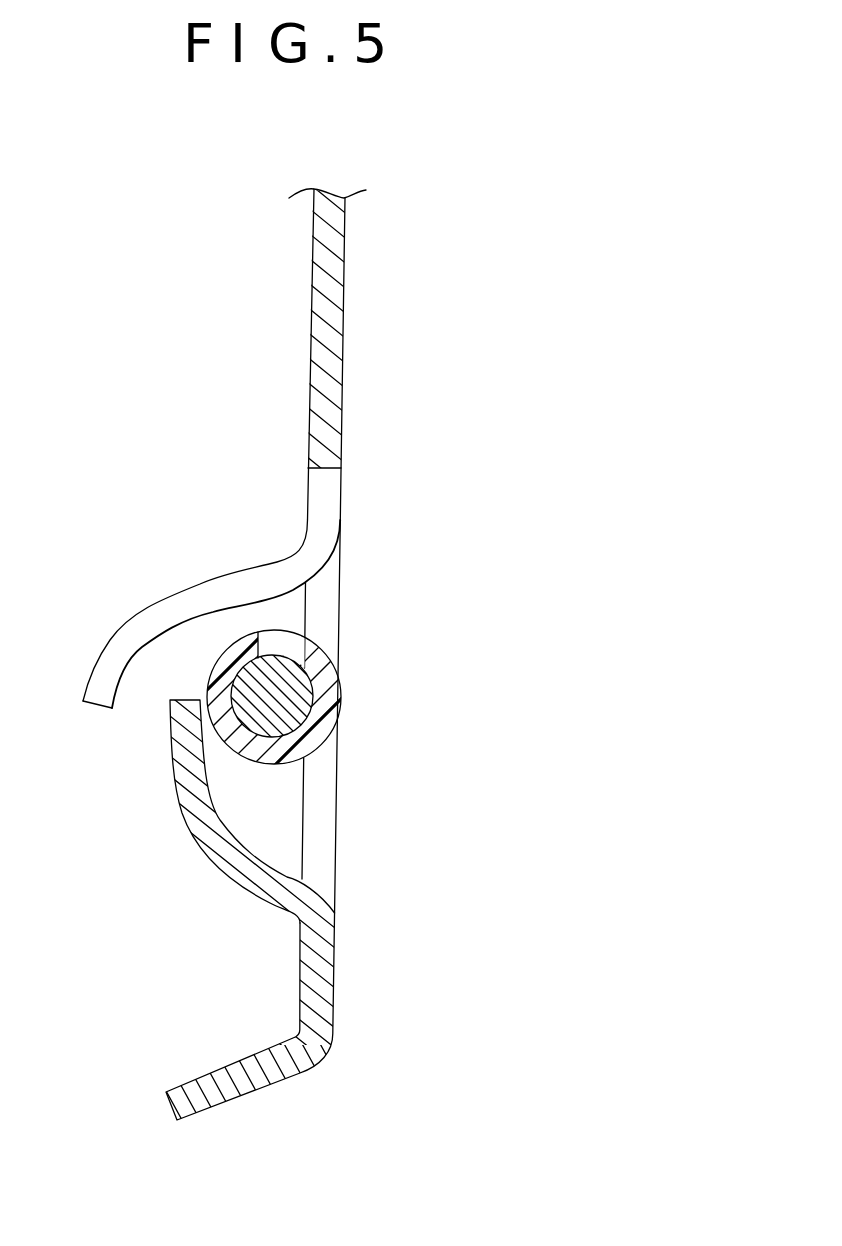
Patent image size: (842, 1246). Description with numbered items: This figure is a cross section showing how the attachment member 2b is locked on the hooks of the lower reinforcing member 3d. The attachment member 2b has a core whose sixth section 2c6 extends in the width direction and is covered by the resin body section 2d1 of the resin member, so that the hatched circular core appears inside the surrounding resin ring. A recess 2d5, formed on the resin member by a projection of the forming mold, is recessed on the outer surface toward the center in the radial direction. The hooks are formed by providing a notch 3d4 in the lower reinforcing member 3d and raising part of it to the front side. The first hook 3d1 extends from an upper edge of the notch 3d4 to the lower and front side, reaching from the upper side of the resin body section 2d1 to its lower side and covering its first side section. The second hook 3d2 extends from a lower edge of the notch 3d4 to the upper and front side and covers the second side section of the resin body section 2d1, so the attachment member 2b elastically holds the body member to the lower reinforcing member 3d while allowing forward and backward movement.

The lower reinforcing member 3d is at (304, 300).
The first hook 3d1 is at (123, 637).
The second hook 3d2 is at (208, 843).
The notch 3d4 is at (322, 837).
The attachment member 2b is at (352, 660).
The sixth section 2c6 is at (300, 698).
The resin body section 2d1 is at (318, 730).
The recess 2d5 is at (291, 645).